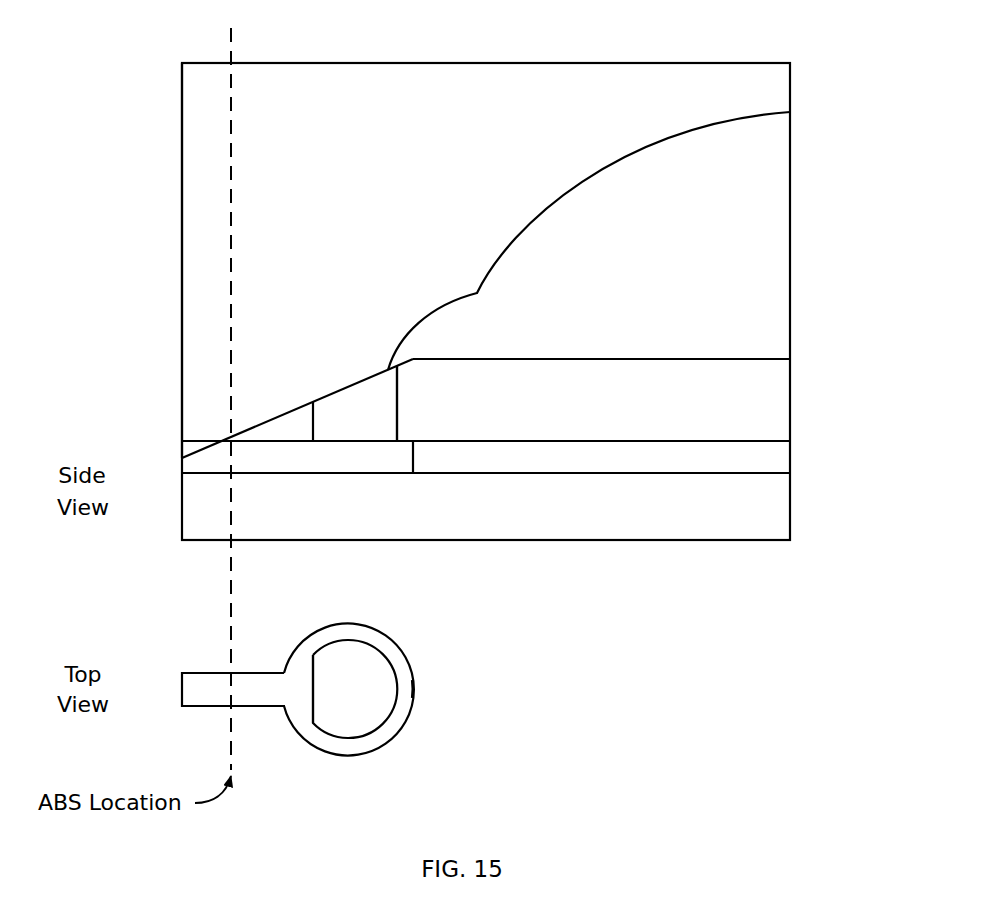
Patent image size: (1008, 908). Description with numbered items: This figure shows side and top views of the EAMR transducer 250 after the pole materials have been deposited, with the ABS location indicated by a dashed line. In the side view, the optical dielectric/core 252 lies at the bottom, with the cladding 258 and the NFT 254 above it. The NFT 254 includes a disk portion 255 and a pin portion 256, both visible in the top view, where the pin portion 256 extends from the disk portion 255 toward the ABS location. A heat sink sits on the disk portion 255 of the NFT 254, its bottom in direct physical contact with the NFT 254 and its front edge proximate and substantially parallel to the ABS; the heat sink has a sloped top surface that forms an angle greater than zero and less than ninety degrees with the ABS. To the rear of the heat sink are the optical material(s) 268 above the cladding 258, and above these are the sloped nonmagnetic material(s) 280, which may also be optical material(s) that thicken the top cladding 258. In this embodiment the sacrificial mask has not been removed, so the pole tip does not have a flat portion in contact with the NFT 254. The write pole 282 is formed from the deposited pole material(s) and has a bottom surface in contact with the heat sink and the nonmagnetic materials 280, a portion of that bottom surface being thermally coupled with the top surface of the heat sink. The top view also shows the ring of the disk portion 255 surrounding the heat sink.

The EAMR transducer 250 is at (482, 25).
The optical dielectric/core 252 is at (182, 508).
The NFT 254 is at (395, 474).
The disk portion 255 is at (432, 688).
The pin portion 256 is at (254, 661).
The cladding 258 is at (790, 457).
The optical material(s) 268 is at (790, 405).
The nonmagnetic material(s) 280 is at (790, 220).
The write pole 282 is at (182, 256).